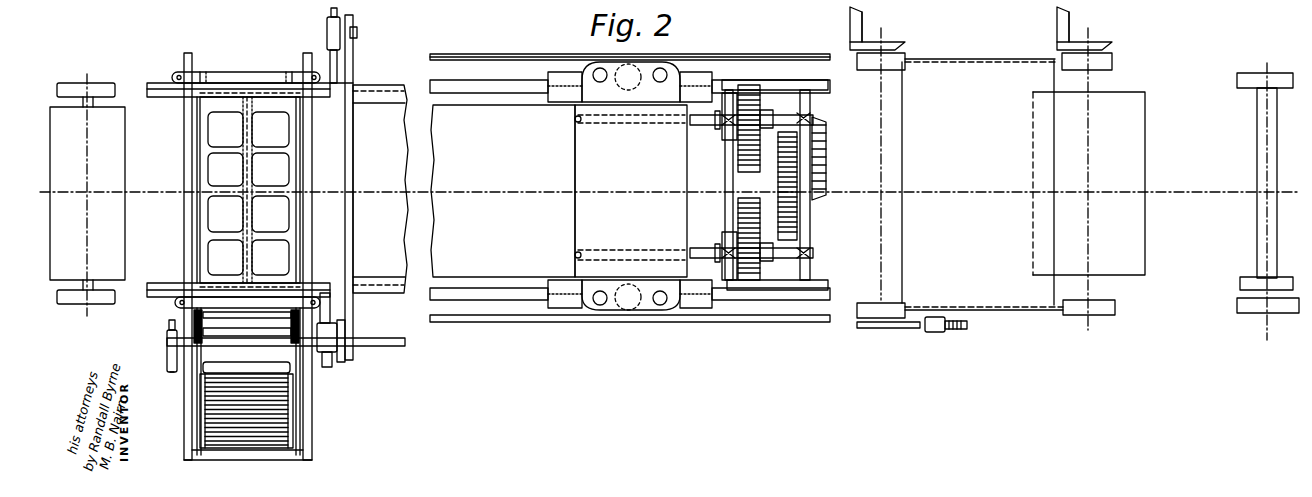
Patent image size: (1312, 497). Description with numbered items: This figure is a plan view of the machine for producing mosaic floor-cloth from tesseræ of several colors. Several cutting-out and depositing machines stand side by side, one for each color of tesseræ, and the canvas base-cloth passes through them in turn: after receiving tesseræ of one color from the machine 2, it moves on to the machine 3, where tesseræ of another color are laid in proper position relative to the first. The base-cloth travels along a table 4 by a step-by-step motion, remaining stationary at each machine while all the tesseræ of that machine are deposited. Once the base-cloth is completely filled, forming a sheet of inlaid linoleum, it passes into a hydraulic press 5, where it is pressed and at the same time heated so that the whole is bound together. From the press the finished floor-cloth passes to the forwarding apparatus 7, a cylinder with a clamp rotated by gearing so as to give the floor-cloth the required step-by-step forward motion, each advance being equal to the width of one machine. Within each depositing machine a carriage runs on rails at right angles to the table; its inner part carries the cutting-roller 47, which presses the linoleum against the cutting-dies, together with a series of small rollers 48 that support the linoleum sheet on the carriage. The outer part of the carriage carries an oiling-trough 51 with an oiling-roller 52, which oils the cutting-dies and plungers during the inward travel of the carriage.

The machine 2 is at (238, 254).
The machine 3 is at (367, 184).
The table 4 is at (503, 191).
The hydraulic press 5 is at (631, 191).
The forwarding apparatus 7 is at (1089, 183).
The cutting-roller 47 is at (206, 369).
The small rollers 48 is at (291, 420).
The oiling-trough 51 is at (168, 341).
The oiling-roller 52 is at (258, 321).